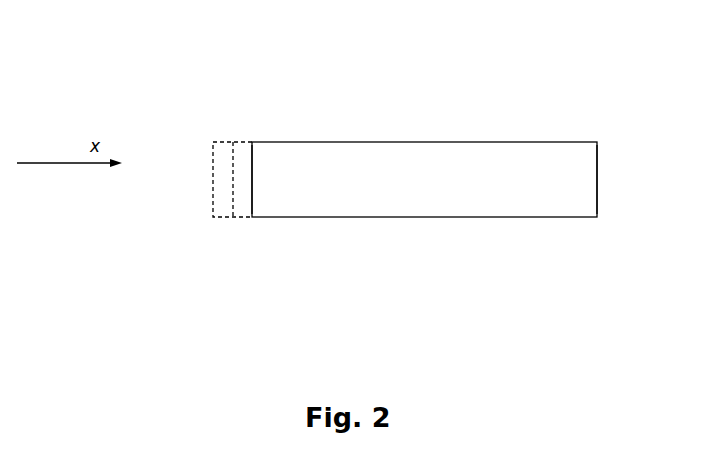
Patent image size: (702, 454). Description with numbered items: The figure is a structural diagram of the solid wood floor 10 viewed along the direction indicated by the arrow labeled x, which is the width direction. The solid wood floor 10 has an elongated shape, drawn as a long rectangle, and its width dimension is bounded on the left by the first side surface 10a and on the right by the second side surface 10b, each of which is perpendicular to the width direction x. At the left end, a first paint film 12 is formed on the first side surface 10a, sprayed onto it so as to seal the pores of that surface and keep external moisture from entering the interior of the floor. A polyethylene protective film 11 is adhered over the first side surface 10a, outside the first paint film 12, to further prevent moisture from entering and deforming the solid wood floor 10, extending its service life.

The solid wood floor 10 is at (438, 116).
The first side surface 10a is at (248, 159).
The second side surface 10b is at (605, 163).
The polyethylene protective film 11 is at (222, 185).
The first paint film 12 is at (243, 188).